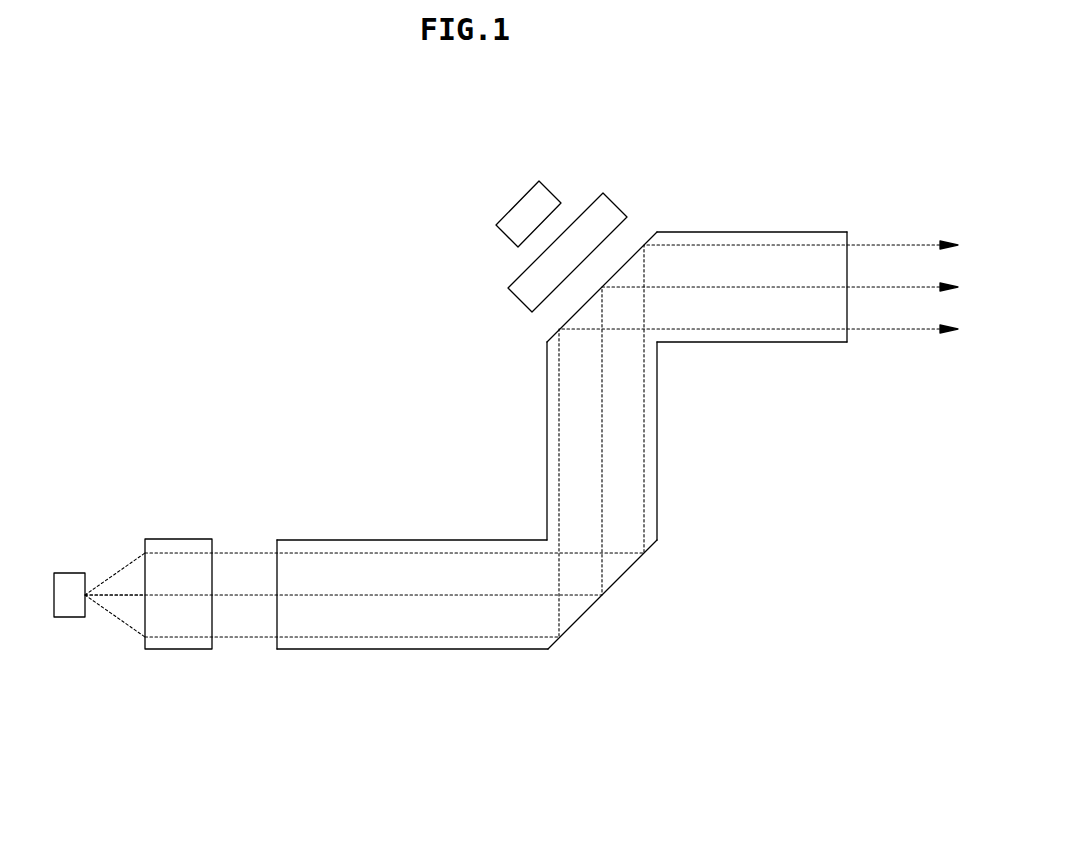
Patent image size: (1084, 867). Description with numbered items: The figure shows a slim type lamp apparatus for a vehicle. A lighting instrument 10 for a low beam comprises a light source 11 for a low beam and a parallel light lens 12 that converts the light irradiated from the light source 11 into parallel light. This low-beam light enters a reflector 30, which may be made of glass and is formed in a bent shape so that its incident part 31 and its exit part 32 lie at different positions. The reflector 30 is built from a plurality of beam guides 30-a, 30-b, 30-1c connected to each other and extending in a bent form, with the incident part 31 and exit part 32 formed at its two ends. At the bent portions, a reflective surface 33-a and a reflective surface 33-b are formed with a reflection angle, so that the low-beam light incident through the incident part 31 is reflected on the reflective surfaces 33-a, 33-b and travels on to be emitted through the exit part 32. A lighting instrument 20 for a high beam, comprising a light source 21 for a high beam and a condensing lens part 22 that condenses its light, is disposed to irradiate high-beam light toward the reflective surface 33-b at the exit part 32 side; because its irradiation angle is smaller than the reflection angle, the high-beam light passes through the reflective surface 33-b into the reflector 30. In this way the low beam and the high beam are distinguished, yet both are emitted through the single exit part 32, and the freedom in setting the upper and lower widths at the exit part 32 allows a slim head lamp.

The lighting instrument for a low beam 10 is at (165, 445).
The light source for a low beam 11 is at (72, 578).
The parallel light lens 12 is at (178, 540).
The lighting instrument for a high beam 20 is at (422, 170).
The light source for a high beam 21 is at (515, 217).
The condensing lens part 22 is at (523, 278).
The reflector 30 is at (689, 530).
The beam guide 30-a is at (612, 442).
The beam guide 30-b is at (417, 615).
The output light guide portion 30-1c is at (730, 270).
The incident part 31 is at (277, 619).
The exit part 32 is at (848, 262).
The reflective surface 33-a is at (592, 607).
The reflective surface 33-b is at (580, 315).